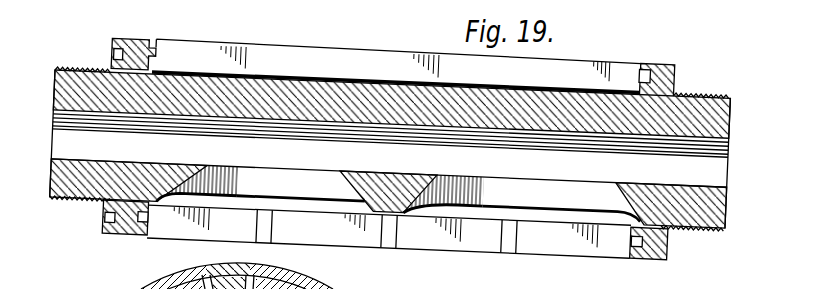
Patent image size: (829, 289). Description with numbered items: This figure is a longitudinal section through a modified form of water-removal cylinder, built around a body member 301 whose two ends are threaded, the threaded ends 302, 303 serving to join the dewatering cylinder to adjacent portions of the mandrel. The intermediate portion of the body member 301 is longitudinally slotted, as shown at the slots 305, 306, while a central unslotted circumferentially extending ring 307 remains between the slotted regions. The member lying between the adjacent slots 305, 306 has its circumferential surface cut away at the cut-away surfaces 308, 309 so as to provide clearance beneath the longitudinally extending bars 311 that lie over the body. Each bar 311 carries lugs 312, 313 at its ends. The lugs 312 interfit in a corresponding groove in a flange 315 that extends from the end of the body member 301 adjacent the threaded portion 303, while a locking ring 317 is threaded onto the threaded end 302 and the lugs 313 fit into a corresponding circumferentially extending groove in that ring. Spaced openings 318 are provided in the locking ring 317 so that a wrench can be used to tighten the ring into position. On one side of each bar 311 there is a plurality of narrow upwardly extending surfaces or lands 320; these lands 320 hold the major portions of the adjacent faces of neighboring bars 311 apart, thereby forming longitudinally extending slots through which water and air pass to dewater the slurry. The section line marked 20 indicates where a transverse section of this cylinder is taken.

The section line 20 is at (298, 144).
The body member 301 is at (365, 149).
The threaded end 302 is at (343, 144).
The threaded end 303 is at (716, 80).
The longitudinal slot 305 is at (462, 183).
The longitudinal slot 306 is at (302, 172).
The central unslotted ring 307 is at (388, 179).
The cut-away surface 308 is at (562, 187).
The cut-away surface 309 is at (178, 125).
The longitudinally extending bar 311 is at (624, 257).
The lug 312 is at (655, 58).
The lug 313 is at (396, 52).
The flange 315 is at (682, 72).
The locking ring 317 is at (135, 40).
The spaced opening 318 is at (98, 221).
The land 320 is at (511, 252).